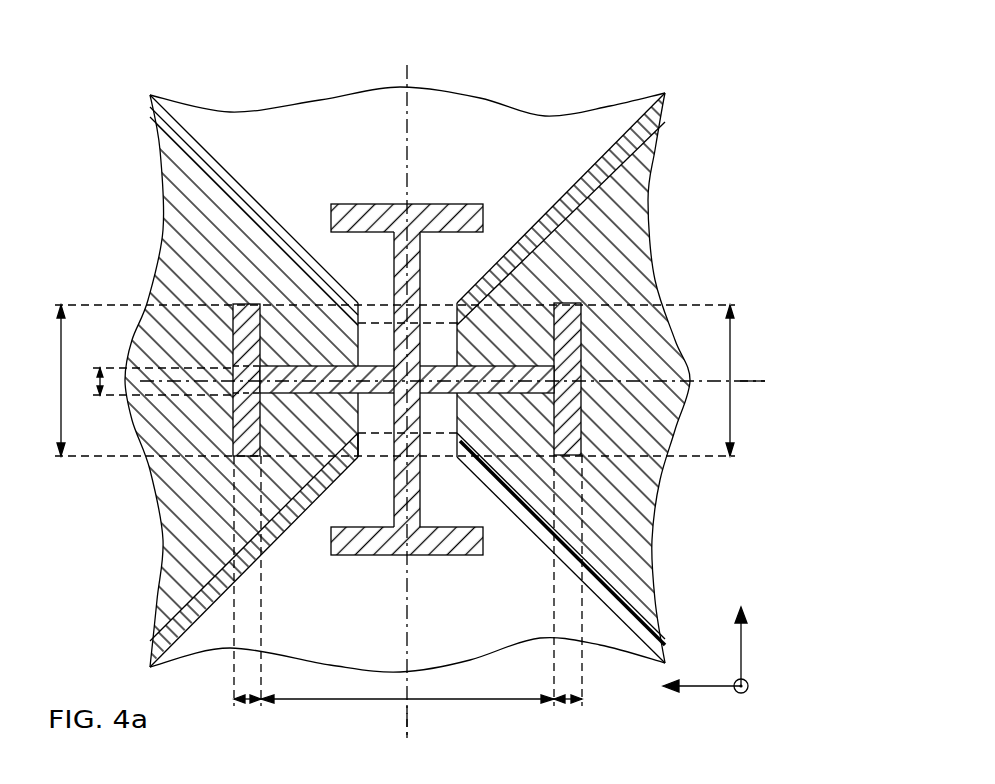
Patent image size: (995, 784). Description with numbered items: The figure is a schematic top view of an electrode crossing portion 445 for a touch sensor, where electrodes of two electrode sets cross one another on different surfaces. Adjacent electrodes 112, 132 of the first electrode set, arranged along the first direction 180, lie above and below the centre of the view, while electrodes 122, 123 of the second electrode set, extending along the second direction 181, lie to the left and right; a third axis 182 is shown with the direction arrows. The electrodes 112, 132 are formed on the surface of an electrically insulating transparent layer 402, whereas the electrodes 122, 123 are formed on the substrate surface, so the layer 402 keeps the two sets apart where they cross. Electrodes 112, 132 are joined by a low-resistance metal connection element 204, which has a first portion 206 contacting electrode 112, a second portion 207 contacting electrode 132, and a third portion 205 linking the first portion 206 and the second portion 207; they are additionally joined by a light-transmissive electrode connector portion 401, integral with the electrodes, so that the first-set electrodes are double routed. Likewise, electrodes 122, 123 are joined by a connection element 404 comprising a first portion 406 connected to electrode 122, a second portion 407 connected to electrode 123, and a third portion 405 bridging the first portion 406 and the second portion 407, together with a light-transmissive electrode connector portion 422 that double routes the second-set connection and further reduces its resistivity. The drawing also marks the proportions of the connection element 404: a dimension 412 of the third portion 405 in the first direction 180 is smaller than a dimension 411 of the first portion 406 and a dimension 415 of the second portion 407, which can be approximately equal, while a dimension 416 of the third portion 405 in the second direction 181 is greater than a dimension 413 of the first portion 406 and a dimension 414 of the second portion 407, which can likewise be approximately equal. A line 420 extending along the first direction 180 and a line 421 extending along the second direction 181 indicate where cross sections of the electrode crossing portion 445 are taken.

The electrode crossing portion 445 is at (721, 96).
The electrode 112 is at (304, 143).
The electrode 132 is at (533, 626).
The electrode 122 is at (224, 254).
The electrode 123 is at (611, 264).
The connection element 204 is at (316, 219).
The electrically insulating transparent layer 402 is at (168, 590).
The electrode connector portion 401 is at (357, 444).
The connection element 404 is at (604, 357).
The electrode connector portion 422 is at (458, 446).
The first portion 406 is at (233, 426).
The second portion 407 is at (583, 424).
The third portion 405 is at (504, 364).
The first portion 206 is at (448, 203).
The second portion 207 is at (452, 556).
The third portion 205 is at (420, 262).
The dimension 411 is at (60, 381).
The dimension 412 is at (98, 369).
The dimension 415 is at (735, 347).
The line 421 is at (748, 382).
The dimension 413 is at (241, 703).
The dimension 416 is at (487, 702).
The dimension 414 is at (562, 703).
The line 420 is at (406, 728).
The first direction 180 is at (741, 643).
The second direction 181 is at (710, 687).
The axis out of plane 182 is at (748, 687).